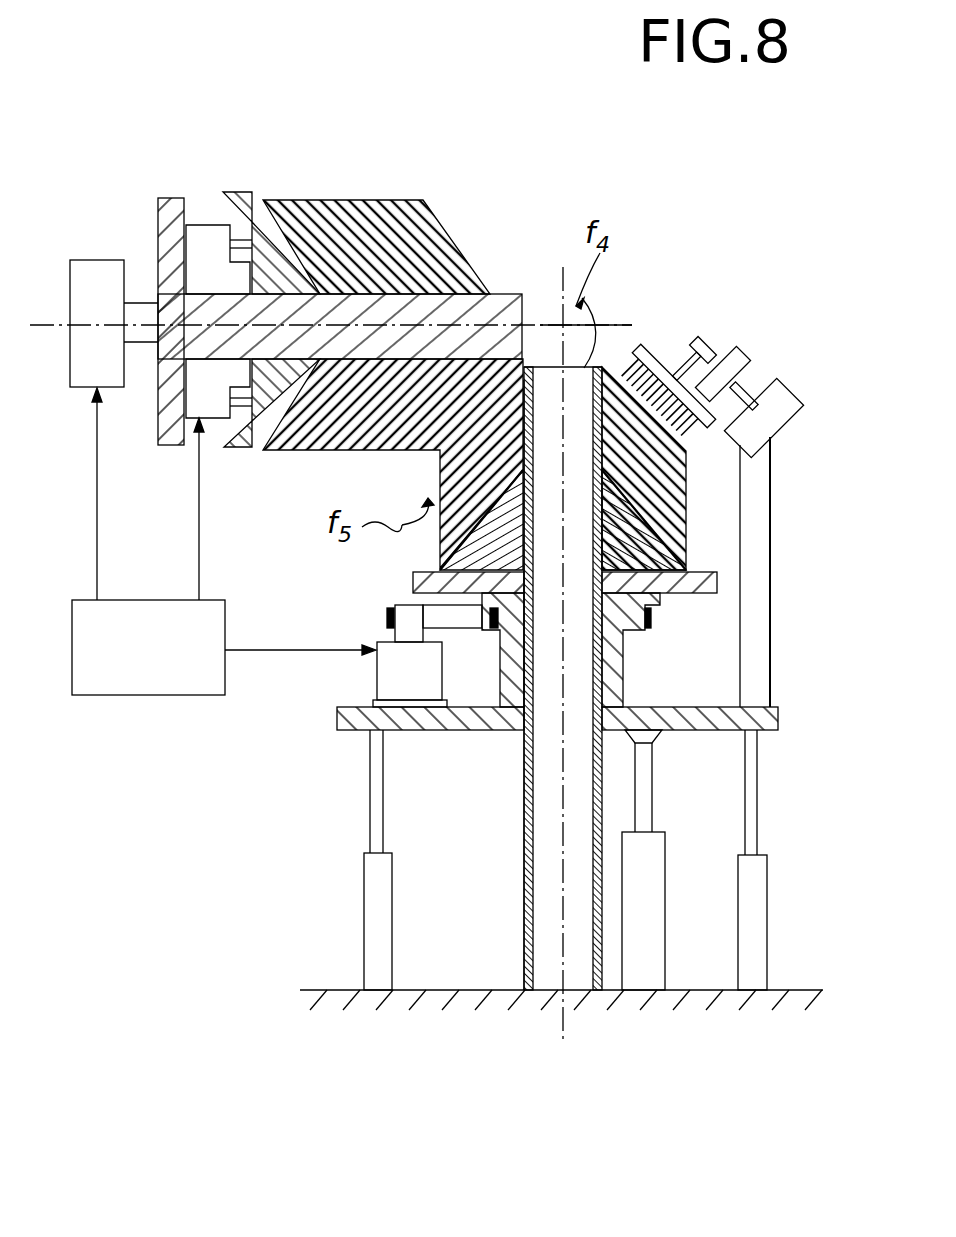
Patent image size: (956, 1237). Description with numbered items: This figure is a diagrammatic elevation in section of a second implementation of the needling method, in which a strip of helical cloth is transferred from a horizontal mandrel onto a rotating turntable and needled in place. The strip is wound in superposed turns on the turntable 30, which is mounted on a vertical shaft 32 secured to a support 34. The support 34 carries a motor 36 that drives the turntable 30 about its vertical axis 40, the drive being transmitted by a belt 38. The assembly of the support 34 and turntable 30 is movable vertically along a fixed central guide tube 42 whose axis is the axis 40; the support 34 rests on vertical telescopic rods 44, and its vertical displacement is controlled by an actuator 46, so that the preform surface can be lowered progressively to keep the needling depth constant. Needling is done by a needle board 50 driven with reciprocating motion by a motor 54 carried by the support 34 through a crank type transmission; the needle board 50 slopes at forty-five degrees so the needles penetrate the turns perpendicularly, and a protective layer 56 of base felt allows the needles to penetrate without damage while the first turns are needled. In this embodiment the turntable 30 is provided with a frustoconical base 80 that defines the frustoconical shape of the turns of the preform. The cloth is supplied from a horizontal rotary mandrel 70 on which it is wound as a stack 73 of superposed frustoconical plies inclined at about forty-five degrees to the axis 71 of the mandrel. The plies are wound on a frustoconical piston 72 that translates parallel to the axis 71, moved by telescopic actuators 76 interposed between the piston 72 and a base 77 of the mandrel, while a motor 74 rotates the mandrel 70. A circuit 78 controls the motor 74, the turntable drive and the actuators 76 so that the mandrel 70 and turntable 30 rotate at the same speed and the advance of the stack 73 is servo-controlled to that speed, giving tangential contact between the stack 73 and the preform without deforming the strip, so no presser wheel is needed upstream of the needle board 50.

The turntable 30 is at (712, 596).
The vertical shaft 32 is at (623, 673).
The support 34 is at (763, 723).
The motor 36 is at (397, 663).
The belt 38 is at (445, 613).
The vertical axis 40 is at (560, 792).
The central guide tube 42 is at (523, 875).
The vertical telescopic rods 44 is at (378, 905).
The actuator 46 is at (648, 910).
The needle board 50 is at (653, 352).
The motor 54 is at (780, 396).
The protective layer 56 is at (643, 527).
The horizontal rotary mandrel 70 is at (493, 313).
The axis of the mandrel 71 is at (618, 325).
The frustoconical piston 72 is at (253, 450).
The stack of superposed frustoconical plies 73 is at (435, 217).
The motor 74 is at (95, 260).
The telescopic actuators 76 is at (205, 225).
The base of the mandrel 77 is at (178, 198).
The control circuit 78 is at (110, 652).
The frustoconical base 80 is at (647, 557).